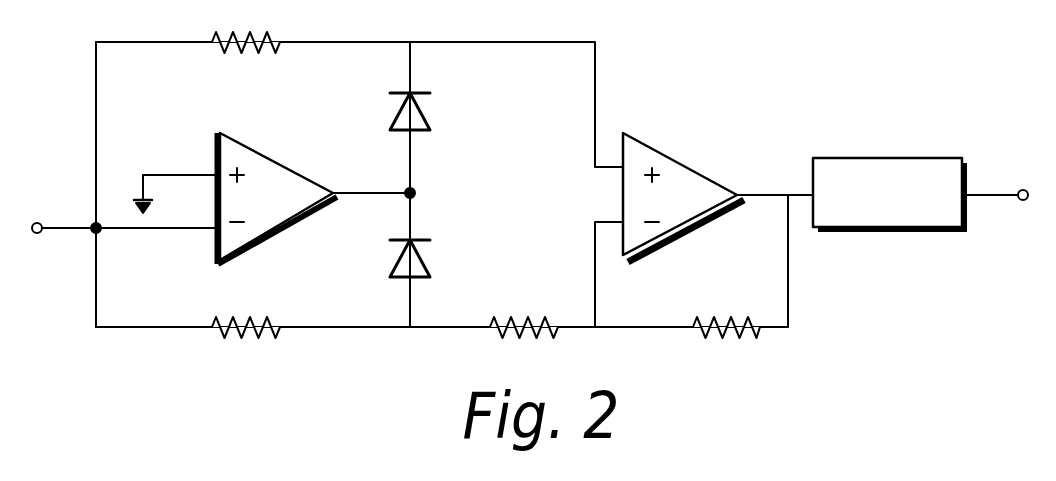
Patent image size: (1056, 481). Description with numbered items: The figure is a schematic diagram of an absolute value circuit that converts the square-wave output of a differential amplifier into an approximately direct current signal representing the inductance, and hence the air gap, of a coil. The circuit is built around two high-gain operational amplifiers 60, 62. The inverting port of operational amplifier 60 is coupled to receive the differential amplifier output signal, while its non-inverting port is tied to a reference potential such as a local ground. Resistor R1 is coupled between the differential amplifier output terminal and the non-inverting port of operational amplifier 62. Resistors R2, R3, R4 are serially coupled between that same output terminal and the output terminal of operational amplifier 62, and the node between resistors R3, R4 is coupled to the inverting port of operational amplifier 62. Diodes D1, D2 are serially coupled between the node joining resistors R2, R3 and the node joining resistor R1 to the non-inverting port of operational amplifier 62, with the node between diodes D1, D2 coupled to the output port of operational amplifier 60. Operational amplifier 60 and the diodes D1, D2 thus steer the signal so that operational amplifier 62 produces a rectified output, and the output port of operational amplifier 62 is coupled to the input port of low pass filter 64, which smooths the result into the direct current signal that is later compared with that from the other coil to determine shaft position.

The operational amplifier 60 is at (280, 165).
The operational amplifier 62 is at (688, 169).
The low pass filter 64 is at (919, 158).
The resistor R1 is at (246, 57).
The resistor R2 is at (246, 311).
The resistor R3 is at (524, 314).
The resistor R4 is at (726, 315).
The diode D1 is at (430, 263).
The diode D2 is at (432, 116).